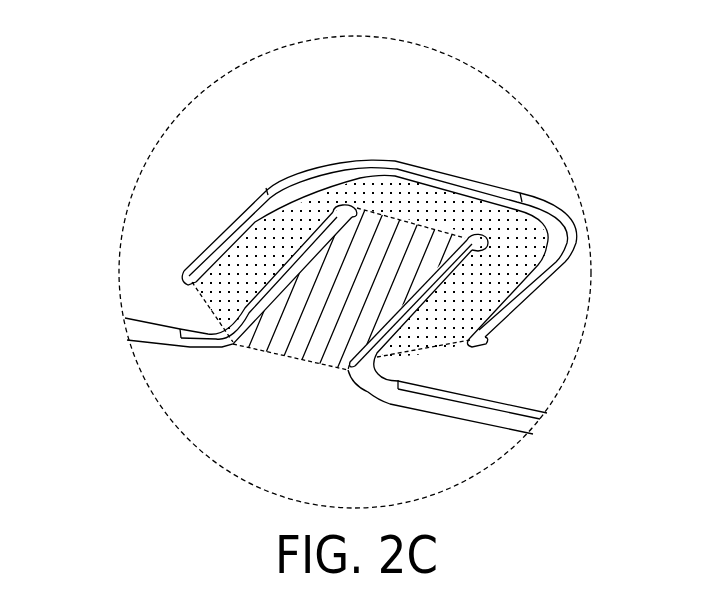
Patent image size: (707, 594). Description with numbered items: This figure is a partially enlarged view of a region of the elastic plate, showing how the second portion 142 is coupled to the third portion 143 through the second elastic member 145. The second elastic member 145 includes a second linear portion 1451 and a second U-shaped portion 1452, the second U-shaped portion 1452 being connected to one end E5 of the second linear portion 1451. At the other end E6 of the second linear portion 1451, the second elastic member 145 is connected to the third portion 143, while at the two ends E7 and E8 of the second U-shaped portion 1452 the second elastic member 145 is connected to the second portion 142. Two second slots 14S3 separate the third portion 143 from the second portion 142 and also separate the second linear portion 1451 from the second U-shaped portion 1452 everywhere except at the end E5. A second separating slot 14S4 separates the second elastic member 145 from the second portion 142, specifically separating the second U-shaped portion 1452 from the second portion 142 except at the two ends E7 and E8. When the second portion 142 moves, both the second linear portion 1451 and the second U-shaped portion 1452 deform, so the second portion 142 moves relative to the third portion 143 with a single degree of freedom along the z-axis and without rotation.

The second linear portion 1451 is at (390, 231).
The second U-shaped portion 1452 is at (445, 207).
The second elastic member 145 is at (396, 212).
The end of the second linear portion E5 is at (455, 232).
The other end of the second linear portion E6 is at (284, 360).
The end of the second U-shaped portion E7 is at (195, 304).
The end of the second U-shaped portion E8 is at (425, 357).
The second slot 14S3 is at (147, 340).
The second separating slot 14S4 is at (243, 220).
The second portion 142 is at (572, 292).
The third portion 143 is at (256, 460).